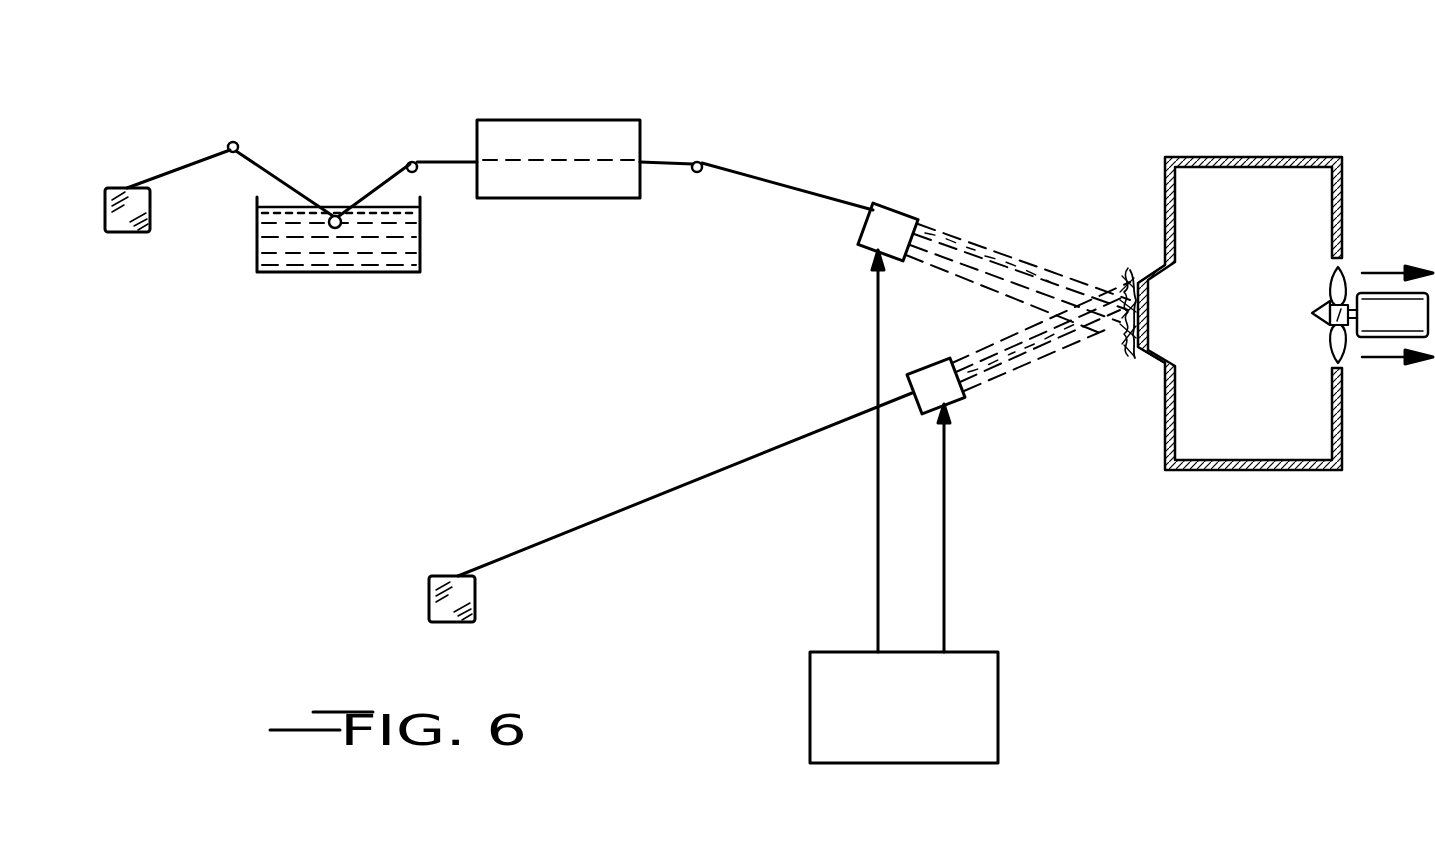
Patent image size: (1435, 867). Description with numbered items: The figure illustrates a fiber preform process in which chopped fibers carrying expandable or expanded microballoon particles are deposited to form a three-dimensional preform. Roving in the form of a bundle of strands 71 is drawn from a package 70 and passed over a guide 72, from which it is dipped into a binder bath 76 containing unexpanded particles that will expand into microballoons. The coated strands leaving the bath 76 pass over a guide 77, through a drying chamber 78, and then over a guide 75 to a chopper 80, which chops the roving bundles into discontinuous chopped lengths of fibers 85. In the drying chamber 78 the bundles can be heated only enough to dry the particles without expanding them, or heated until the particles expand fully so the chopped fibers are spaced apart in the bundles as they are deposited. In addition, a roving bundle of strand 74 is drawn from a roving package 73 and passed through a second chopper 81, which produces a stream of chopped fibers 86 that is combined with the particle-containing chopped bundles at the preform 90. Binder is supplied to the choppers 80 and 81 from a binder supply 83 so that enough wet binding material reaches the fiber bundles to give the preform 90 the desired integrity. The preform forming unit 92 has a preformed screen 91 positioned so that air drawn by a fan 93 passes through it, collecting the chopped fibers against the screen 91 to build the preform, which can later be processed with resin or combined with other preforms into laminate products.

The package 70 is at (108, 187).
The bundle of strands 71 is at (190, 161).
The guide 72 is at (242, 142).
The roving package 73 is at (475, 595).
The roving bundle of strand 74 is at (636, 503).
The guide 75 is at (698, 162).
The bath 76 is at (323, 207).
The guide 77 is at (403, 160).
The drying chamber 78 is at (523, 120).
The chopper 80 is at (890, 205).
The chopper 81 is at (910, 363).
The binder supply 83 is at (1000, 688).
The chopped lengths of fibers 85 is at (978, 253).
The lower spray of fibers 86 is at (1003, 387).
The preform 90 is at (1130, 268).
The preformed screen 91 is at (1147, 367).
The preform forming unit 92 is at (1237, 471).
The fan 93 is at (1385, 270).